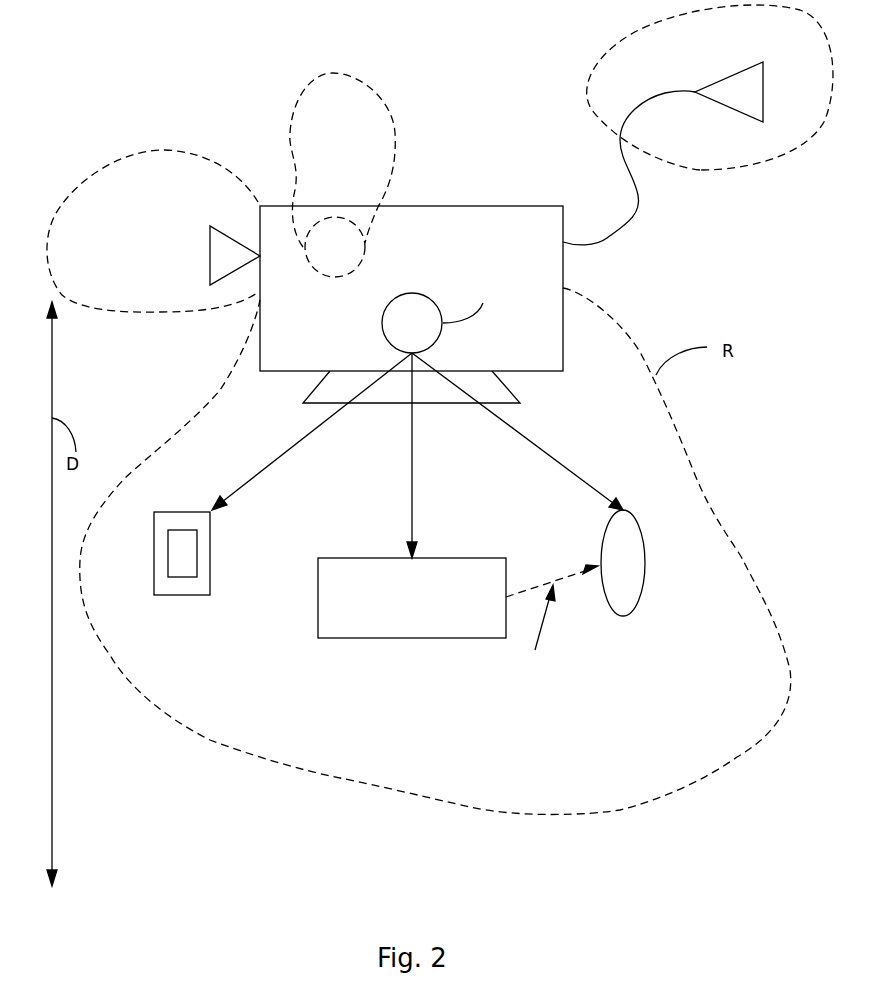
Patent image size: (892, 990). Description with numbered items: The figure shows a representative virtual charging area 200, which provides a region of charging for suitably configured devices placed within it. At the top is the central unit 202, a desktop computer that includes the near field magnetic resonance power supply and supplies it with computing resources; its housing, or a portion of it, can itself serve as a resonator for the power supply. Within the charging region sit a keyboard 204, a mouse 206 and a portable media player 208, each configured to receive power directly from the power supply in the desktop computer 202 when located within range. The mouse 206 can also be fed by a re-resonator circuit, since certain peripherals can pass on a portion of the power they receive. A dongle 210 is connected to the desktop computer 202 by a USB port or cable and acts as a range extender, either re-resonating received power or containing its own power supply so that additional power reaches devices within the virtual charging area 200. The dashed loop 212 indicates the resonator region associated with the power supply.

The virtual charging area 200 is at (295, 815).
The central unit 202 is at (453, 324).
The keyboard 204 is at (412, 598).
The mouse 206 is at (566, 603).
The portable media player 208 is at (182, 511).
The dongle 210 is at (440, 158).
The magnetic resonator 212 is at (343, 175).